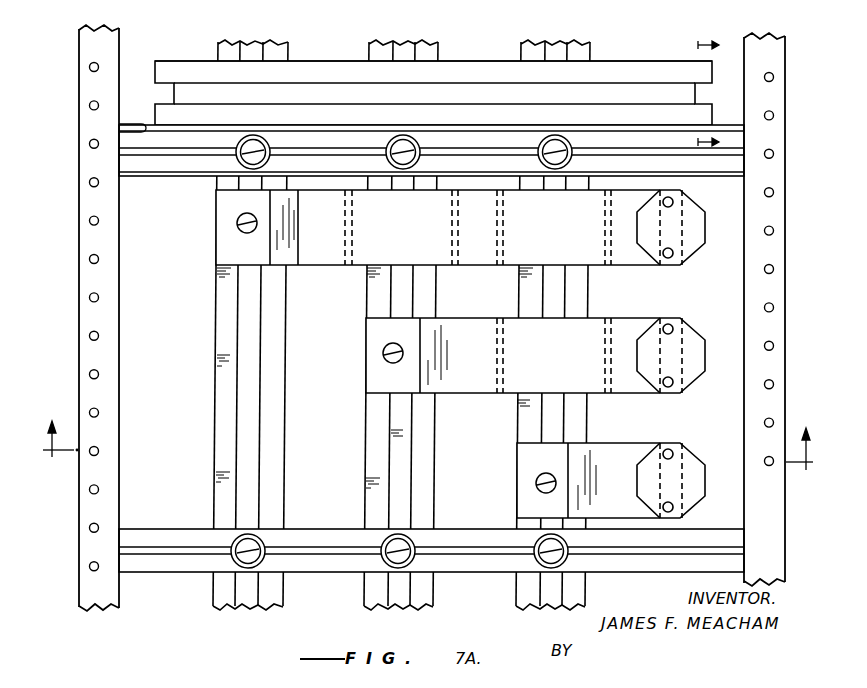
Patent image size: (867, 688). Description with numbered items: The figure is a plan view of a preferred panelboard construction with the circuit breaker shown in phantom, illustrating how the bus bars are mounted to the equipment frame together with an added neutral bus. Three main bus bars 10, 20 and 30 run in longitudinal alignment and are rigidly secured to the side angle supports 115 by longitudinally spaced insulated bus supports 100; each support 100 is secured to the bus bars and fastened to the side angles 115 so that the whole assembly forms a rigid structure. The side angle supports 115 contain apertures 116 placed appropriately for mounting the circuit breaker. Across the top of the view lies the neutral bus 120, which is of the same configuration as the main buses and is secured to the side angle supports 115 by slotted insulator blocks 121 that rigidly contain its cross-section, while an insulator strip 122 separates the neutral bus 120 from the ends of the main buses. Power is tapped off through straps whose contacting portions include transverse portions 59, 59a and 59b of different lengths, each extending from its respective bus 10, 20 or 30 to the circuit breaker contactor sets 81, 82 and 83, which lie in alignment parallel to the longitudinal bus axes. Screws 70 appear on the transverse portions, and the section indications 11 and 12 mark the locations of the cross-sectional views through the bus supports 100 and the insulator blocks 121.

The bus bar 10 is at (215, 327).
The bus bar 20 is at (362, 440).
The bus bar 30 is at (582, 413).
The transverse portion 59 is at (471, 242).
The transverse portion 59a is at (549, 371).
The transverse portion 59b is at (616, 465).
The arm fastening screw 70 is at (236, 224).
The contactor set 81 is at (700, 220).
The contactor set 82 is at (700, 358).
The contactor set 83 is at (699, 463).
The insulated bus support 100 is at (192, 168).
The side angle support 115 is at (744, 296).
The apertures 116 is at (86, 187).
The neutral bus 120 is at (645, 61).
The insulator block 121 is at (480, 76).
The insulator strip 122 is at (140, 129).
The section line 11- 11 is at (426, 456).
The section line 12- 12 is at (718, 94).